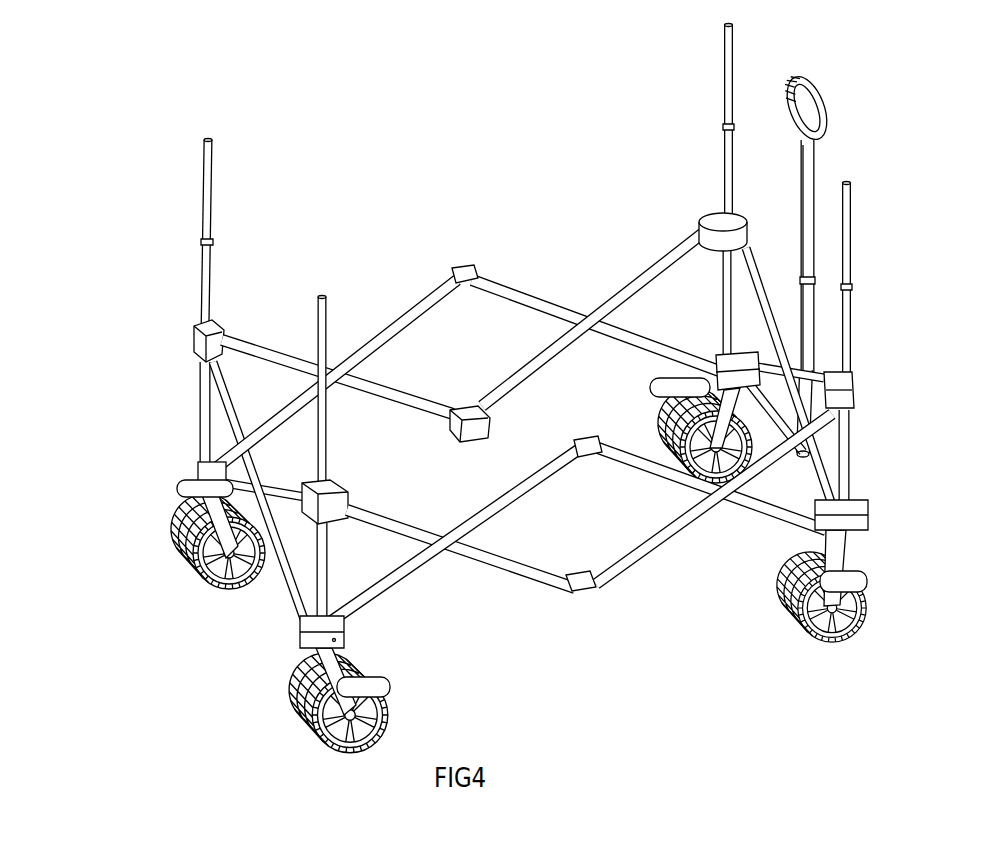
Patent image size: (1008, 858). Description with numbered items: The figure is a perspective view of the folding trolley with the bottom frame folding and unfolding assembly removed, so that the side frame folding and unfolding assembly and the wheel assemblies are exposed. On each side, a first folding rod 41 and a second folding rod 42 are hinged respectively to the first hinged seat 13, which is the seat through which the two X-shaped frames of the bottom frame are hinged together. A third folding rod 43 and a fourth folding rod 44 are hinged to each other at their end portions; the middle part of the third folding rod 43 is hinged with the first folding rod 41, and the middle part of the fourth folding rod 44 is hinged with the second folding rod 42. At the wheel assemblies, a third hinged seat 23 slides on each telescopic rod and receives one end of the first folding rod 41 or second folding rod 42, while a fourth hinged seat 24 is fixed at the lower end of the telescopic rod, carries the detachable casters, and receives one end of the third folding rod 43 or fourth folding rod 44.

The first hinged seat 13 is at (458, 406).
The third hinged seat 23 is at (194, 342).
The fourth hinged seat 24 is at (300, 638).
The first folding rod 41 is at (501, 570).
The second folding rod 42 is at (664, 538).
The third folding rod 43 is at (296, 397).
The fourth folding rod 44 is at (567, 312).